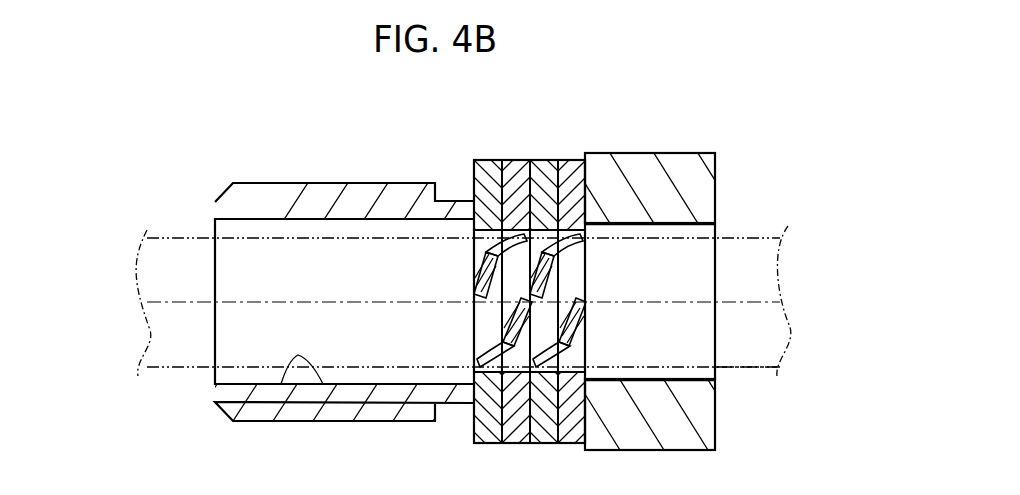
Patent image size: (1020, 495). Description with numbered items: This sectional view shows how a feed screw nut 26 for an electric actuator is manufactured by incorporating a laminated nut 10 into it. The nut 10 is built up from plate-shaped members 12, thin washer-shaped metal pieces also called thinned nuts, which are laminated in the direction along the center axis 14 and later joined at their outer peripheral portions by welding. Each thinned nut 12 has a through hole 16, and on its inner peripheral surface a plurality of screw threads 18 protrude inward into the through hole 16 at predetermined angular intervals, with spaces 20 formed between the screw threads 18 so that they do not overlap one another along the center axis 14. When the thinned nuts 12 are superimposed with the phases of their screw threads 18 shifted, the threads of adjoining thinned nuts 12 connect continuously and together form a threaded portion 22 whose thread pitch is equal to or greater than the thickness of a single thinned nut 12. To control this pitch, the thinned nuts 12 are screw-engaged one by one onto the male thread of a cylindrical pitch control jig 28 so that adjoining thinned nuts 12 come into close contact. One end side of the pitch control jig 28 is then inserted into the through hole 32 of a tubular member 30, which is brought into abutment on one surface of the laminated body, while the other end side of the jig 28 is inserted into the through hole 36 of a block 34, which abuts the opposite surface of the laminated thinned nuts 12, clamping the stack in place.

The nut 10 is at (532, 272).
The plate-shaped member 12 is at (566, 165).
The center axis 14 is at (730, 301).
The through hole 16 is at (578, 358).
The screw thread 18 is at (580, 252).
The space 20 is at (568, 290).
The threaded portion 22 is at (493, 300).
The feed screw nut 26 is at (413, 288).
The pitch control jig 28 is at (745, 368).
The tubular member 30 is at (258, 202).
The through hole 32 is at (298, 355).
The block 34 is at (698, 182).
The through hole 36 is at (662, 379).